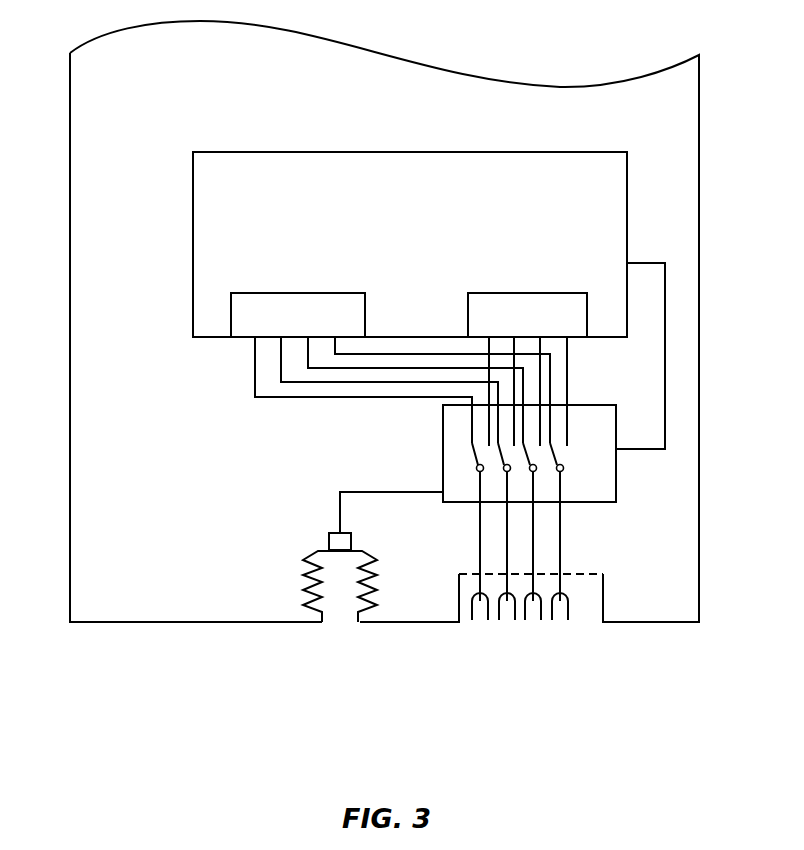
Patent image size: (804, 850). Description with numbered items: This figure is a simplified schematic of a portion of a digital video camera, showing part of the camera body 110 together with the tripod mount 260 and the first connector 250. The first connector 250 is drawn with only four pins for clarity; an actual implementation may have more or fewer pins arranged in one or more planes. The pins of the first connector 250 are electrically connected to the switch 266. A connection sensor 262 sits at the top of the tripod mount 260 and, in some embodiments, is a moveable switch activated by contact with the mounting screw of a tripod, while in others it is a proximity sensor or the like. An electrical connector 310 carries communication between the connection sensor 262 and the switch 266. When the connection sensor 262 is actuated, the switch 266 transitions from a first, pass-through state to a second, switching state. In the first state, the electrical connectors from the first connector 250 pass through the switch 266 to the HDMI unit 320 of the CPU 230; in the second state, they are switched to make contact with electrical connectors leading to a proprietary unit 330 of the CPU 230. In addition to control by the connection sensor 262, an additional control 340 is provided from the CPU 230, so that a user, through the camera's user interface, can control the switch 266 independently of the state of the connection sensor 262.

The camera body 110 is at (90, 622).
The CPU 230 is at (320, 150).
The proprietary unit 330 is at (315, 293).
The HDMI unit 320 is at (502, 293).
The switch 266 is at (443, 456).
The additional control 340 is at (627, 452).
The electrical connector 310 is at (356, 490).
The connection sensor 262 is at (329, 538).
The tripod mount 260 is at (338, 612).
The first connector 250 is at (522, 640).